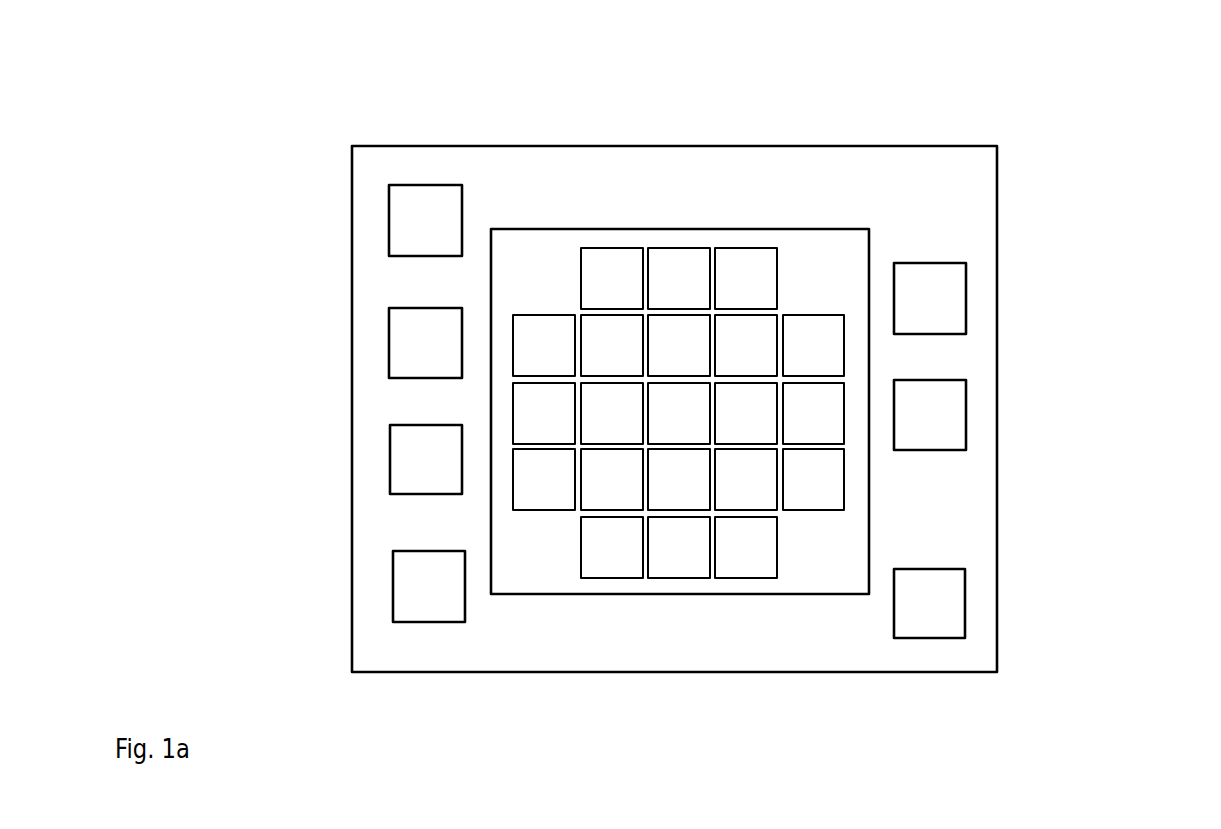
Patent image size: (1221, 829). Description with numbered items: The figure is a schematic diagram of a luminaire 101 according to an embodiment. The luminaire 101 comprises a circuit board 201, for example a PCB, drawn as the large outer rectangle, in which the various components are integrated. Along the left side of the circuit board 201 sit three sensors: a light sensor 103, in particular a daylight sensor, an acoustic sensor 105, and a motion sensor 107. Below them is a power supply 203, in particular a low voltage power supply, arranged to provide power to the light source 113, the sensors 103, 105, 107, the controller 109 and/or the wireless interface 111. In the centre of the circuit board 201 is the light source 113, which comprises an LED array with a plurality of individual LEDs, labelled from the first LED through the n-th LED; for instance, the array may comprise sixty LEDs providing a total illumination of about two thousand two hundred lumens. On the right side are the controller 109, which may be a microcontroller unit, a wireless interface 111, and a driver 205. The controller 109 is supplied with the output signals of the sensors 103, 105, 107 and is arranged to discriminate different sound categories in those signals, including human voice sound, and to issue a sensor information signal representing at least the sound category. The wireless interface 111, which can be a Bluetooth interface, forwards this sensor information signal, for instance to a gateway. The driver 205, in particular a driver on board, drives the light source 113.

The luminaire 101 is at (1073, 120).
The circuit board 201 is at (826, 166).
The light source 113 is at (628, 228).
The light sensor 103 is at (389, 220).
The acoustic sensor 105 is at (390, 345).
The motion sensor 107 is at (390, 460).
The power supply 203 is at (393, 586).
The controller 109 is at (966, 298).
The wireless interface 111 is at (966, 415).
The driver 205 is at (966, 602).